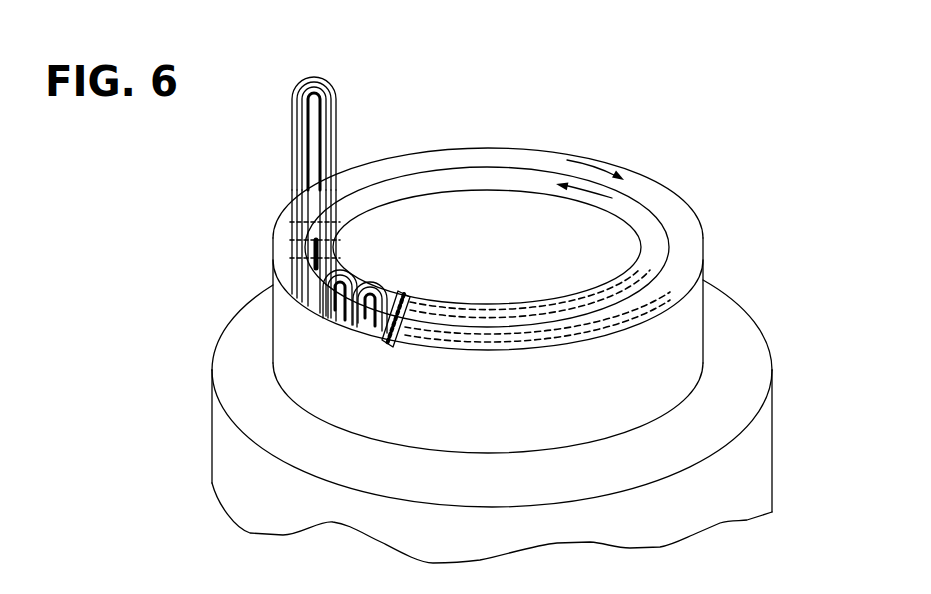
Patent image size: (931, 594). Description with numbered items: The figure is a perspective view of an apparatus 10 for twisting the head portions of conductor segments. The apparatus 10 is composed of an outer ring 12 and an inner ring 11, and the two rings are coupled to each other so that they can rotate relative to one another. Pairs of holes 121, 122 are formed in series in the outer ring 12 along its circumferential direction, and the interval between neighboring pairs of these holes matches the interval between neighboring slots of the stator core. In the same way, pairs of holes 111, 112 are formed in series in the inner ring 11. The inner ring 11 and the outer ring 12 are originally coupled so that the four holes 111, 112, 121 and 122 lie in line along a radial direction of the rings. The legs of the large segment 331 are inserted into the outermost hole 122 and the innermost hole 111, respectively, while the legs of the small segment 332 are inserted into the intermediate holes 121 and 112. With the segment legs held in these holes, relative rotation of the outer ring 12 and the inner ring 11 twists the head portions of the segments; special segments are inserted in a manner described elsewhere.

The apparatus 10 is at (476, 243).
The inner ring 11 is at (640, 210).
The outer ring 12 is at (687, 238).
The hole 111 is at (333, 231).
The hole 112 is at (338, 250).
The hole 121 is at (332, 268).
The hole 122 is at (322, 281).
The large segment 331 is at (333, 93).
The small segment 332 is at (322, 102).